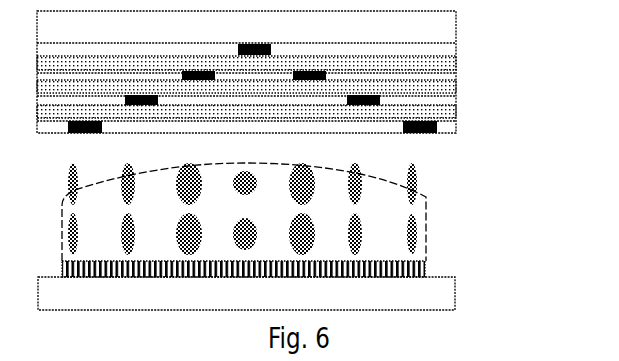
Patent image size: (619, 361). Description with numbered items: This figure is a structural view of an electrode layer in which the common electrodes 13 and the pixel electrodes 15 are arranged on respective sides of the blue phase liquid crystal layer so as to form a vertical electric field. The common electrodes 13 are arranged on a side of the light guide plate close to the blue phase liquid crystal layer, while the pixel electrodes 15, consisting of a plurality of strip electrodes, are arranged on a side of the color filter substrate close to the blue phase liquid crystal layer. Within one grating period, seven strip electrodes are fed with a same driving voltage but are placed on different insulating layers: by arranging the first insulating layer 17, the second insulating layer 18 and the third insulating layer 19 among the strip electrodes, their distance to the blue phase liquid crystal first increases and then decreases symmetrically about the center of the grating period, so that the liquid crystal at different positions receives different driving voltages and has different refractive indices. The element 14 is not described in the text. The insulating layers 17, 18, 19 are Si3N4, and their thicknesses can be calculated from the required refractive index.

The common electrodes 13 is at (417, 268).
The diffusion layer with scattering particles 14 is at (415, 195).
The pixel electrodes 15 is at (440, 132).
The first insulating layer 17 is at (455, 112).
The second insulating layer 18 is at (455, 85).
The third insulating layer 19 is at (453, 58).